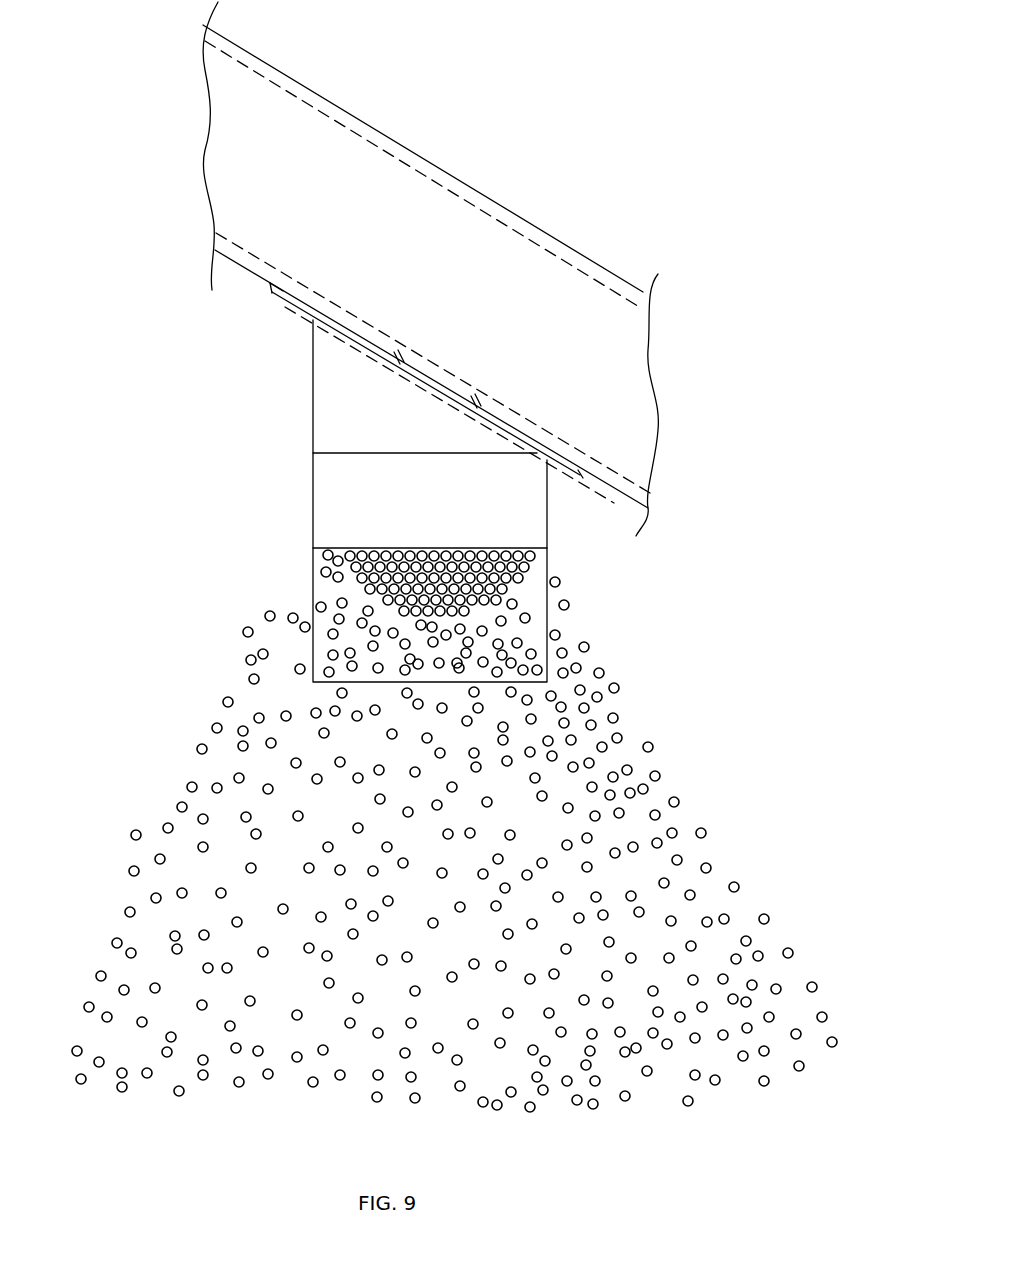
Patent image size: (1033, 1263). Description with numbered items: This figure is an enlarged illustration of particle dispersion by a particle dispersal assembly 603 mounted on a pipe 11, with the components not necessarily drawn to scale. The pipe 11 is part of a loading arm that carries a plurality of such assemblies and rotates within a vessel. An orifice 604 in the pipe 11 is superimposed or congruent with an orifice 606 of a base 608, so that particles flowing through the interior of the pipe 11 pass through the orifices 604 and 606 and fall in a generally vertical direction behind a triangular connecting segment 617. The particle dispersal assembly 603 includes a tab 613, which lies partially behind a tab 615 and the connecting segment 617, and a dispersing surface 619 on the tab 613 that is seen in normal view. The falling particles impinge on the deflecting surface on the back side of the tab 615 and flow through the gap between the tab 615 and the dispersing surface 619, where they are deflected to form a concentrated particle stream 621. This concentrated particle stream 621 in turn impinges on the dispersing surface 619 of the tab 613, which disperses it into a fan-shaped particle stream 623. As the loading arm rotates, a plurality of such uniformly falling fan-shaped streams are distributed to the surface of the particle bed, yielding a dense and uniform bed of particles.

The pipe 11 is at (390, 138).
The particle dispersal assembly 603 is at (158, 547).
The orifice 604 is at (451, 372).
The orifice 606 is at (440, 397).
The base 608 is at (276, 298).
The tab 613 is at (313, 648).
The tab 615 is at (313, 503).
The triangular connecting segment 617 is at (313, 396).
The dispersing surface 619 is at (313, 592).
The concentrated particle stream 621 is at (512, 604).
The fan-shaped particle stream 623 is at (158, 806).